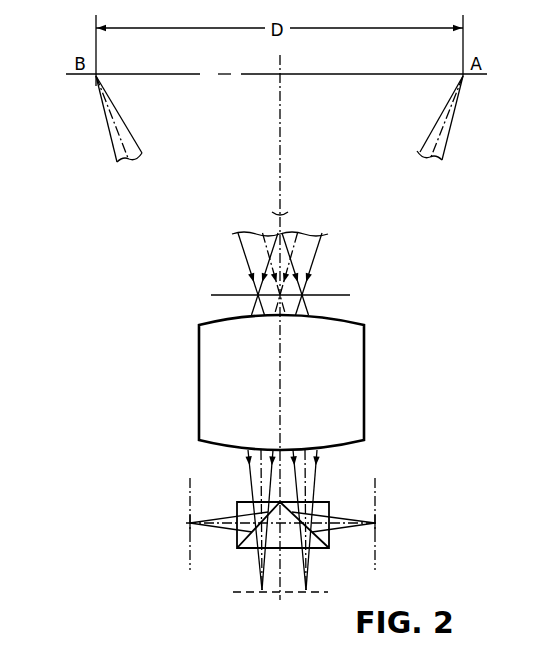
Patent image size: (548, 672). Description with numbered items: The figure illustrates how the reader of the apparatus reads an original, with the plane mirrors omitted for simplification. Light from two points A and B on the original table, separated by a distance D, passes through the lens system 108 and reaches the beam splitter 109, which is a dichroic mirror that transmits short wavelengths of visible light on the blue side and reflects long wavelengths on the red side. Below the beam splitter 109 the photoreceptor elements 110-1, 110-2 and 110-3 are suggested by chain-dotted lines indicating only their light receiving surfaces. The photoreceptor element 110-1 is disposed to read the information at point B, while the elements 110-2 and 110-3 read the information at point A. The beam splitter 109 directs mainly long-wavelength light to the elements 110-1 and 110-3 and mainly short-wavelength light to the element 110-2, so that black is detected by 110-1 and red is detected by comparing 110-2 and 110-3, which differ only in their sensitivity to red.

The lens system 108 is at (364, 372).
The beam splitter 109 is at (237, 507).
The photoreceptor element 110-1 is at (375, 531).
The photoreceptor element 110-2 is at (276, 595).
The photoreceptor element 110-3 is at (189, 535).